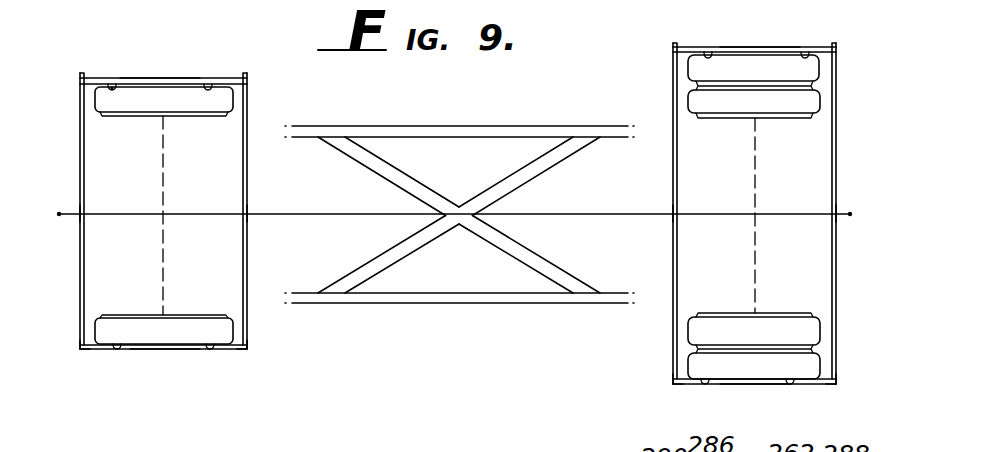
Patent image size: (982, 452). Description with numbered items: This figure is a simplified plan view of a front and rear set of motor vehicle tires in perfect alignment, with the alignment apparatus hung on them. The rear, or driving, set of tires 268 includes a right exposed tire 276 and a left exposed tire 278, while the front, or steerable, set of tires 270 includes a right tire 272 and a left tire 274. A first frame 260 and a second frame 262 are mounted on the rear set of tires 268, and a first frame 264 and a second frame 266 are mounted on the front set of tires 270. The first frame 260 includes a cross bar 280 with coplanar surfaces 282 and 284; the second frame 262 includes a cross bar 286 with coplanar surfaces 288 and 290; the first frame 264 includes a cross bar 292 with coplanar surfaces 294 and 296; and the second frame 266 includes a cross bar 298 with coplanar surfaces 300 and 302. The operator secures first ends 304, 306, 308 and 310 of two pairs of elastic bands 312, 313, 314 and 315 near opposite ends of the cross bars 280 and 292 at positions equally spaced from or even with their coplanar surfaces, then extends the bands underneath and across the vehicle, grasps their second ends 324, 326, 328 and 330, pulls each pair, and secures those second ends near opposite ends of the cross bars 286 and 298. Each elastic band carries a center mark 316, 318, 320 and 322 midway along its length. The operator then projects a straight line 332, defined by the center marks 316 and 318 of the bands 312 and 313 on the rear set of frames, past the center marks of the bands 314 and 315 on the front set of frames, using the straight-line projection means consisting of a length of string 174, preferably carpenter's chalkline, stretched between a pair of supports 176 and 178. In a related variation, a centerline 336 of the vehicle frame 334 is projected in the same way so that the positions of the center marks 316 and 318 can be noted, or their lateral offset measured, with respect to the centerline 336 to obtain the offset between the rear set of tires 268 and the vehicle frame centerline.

The string 174 is at (338, 213).
The first support 176 is at (850, 212).
The second support 178 is at (61, 190).
The first frame 260 is at (740, 391).
The second frame 262 is at (768, 42).
The first frame 264 is at (163, 360).
The second frame 266 is at (190, 74).
The rear set of tires 268 is at (692, 243).
The front set of tires 270 is at (224, 240).
The right tire 272 is at (182, 110).
The left tire 274 is at (170, 317).
The right exposed tire 276 is at (695, 66).
The left exposed tire 278 is at (692, 362).
The cross bar 280 is at (762, 386).
The coplanar surface 282 is at (790, 376).
The coplanar surface 284 is at (705, 377).
The cross bar 286 is at (747, 47).
The coplanar surface 288 is at (805, 55).
The coplanar surface 290 is at (708, 53).
The cross bar 292 is at (148, 350).
The coplanar surface 294 is at (210, 346).
The coplanar surface 296 is at (117, 346).
The cross bar 298 is at (148, 79).
The coplanar surface 300 is at (208, 86).
The coplanar surface 302 is at (112, 85).
The first end of elastic band 304 is at (836, 378).
The first end of elastic band 306 is at (673, 377).
The first end of elastic band 308 is at (248, 346).
The first end of elastic band 310 is at (80, 341).
The elastic band 312 is at (833, 258).
The elastic band 313 is at (673, 266).
The elastic band 314 is at (250, 273).
The elastic band 315 is at (80, 264).
The center mark 316 is at (832, 213).
The center mark 318 is at (675, 213).
The center mark 320 is at (243, 213).
The center mark 322 is at (82, 213).
The second end of elastic band 324 is at (833, 58).
The second end of elastic band 326 is at (673, 53).
The second end of elastic band 328 is at (248, 90).
The second end of elastic band 330 is at (82, 88).
The straight line 332 is at (337, 221).
The vehicle frame 334 is at (490, 125).
The centerline of vehicle frame 336 is at (460, 207).